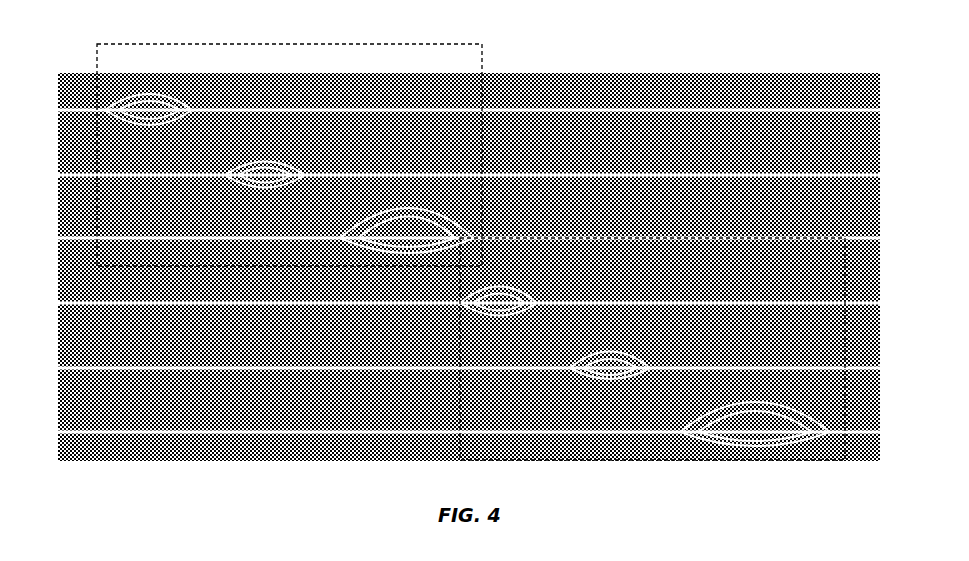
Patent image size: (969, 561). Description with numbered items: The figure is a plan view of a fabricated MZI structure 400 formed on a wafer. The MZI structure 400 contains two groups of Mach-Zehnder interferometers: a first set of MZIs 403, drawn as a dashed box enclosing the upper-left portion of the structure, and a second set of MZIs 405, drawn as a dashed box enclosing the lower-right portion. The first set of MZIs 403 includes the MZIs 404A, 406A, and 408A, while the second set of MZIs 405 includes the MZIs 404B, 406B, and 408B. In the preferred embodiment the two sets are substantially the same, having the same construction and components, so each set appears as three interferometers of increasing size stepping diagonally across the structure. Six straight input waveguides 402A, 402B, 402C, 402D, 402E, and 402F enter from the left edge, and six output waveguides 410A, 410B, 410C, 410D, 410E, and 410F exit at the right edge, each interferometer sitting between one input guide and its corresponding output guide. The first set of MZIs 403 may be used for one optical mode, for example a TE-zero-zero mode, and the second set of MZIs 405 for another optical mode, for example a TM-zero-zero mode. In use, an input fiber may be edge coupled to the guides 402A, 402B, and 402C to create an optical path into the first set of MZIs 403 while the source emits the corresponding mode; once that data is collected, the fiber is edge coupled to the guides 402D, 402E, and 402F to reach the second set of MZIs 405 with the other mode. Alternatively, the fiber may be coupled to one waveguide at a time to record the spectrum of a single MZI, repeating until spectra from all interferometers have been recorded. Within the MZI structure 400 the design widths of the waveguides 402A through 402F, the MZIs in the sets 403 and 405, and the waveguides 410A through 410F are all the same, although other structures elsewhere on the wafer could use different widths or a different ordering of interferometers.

The MZI structure 400 is at (80, 39).
The first set of MZIs 403 is at (274, 42).
The second set of MZIs 405 is at (617, 236).
The waveguide 402A is at (240, 117).
The waveguide 402B is at (240, 181).
The waveguide 402C is at (240, 243).
The waveguide 402D is at (240, 305).
The waveguide 402E is at (240, 370).
The waveguide 402F is at (240, 435).
The MZI 404A is at (157, 74).
The MZI 406A is at (274, 140).
The MZI 408A is at (414, 181).
The MZI 404B is at (497, 266).
The MZI 406B is at (614, 332).
The MZI 408B is at (754, 369).
The waveguide 410A is at (699, 108).
The waveguide 410B is at (698, 172).
The waveguide 410C is at (698, 237).
The waveguide 410D is at (699, 300).
The waveguide 410E is at (698, 364).
The waveguide 410F is at (697, 428).